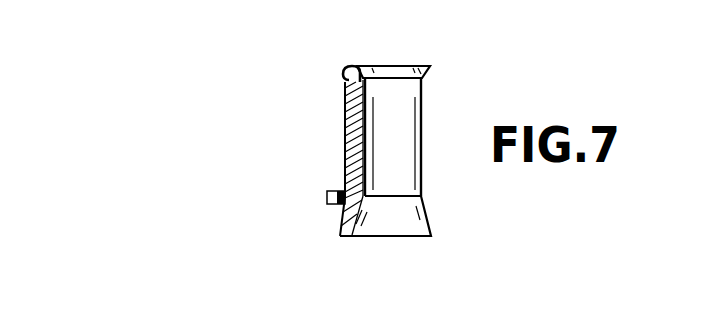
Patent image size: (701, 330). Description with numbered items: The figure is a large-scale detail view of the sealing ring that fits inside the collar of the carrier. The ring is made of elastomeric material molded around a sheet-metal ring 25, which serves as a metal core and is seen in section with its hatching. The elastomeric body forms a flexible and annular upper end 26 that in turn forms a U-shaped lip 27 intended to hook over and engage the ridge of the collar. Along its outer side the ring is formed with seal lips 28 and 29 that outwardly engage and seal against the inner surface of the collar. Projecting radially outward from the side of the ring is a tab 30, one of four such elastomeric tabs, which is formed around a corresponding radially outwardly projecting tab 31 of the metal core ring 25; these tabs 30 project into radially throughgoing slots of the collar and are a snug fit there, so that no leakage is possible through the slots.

The sheet-metal ring 25 is at (343, 127).
The upper end 26 is at (348, 104).
The U-shaped lip 27 is at (349, 63).
The seal lip 28 is at (346, 110).
The seal lip 29 is at (341, 236).
The tab 30 is at (328, 193).
The tab 31 is at (328, 199).